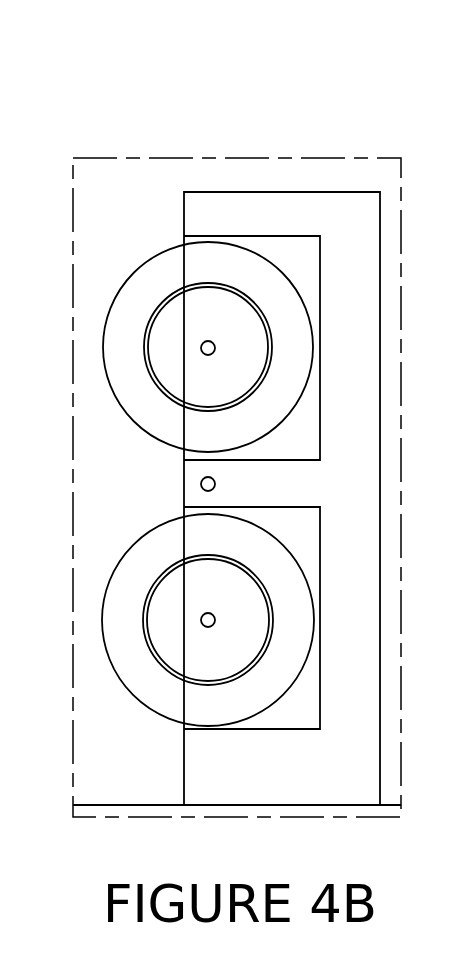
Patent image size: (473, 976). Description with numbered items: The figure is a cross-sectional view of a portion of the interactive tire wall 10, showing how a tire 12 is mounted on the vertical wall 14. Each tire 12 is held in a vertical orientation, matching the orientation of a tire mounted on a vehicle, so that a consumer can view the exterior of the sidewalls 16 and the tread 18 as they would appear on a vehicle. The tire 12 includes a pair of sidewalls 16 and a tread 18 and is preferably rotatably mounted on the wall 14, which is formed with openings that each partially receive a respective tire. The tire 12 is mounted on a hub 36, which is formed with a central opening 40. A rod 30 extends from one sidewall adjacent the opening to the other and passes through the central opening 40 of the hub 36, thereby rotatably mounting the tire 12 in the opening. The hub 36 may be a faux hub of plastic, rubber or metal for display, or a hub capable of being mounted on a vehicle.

The interactive tire wall 10 is at (272, 130).
The tire 12 is at (293, 272).
The vertical wall 14 is at (316, 150).
The sidewall 16 is at (295, 327).
The tread 18 is at (313, 375).
The rod 30 is at (202, 349).
The hub 36 is at (178, 329).
The central opening 40 is at (208, 357).